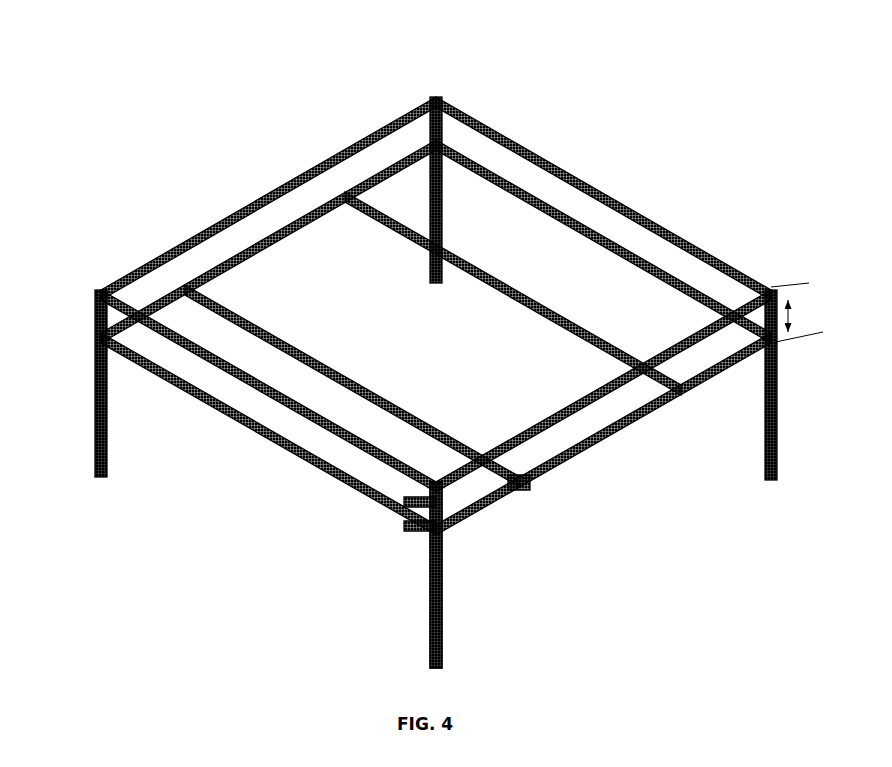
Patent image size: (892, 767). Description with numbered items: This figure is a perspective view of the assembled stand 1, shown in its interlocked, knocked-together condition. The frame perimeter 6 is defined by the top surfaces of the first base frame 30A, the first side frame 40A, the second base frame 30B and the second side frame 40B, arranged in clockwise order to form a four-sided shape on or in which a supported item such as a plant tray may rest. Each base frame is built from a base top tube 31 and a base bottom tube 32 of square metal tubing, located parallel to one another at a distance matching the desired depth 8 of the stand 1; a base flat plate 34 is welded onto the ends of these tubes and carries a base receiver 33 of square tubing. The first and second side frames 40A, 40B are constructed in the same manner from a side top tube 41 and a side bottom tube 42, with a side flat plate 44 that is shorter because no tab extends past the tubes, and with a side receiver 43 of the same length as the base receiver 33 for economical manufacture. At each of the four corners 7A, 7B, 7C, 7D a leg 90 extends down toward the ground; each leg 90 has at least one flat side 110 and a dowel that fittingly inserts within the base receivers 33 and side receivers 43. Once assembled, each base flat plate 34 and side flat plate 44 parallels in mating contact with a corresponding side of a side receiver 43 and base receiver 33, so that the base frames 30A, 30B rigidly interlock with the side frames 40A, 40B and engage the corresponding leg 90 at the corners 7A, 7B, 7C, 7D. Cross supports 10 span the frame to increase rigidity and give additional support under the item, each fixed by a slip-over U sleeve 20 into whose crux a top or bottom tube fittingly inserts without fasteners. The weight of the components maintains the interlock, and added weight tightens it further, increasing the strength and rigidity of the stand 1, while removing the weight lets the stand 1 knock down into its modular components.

The stand 1 is at (213, 163).
The frame perimeter 6 is at (685, 327).
The corner 7A is at (91, 281).
The corner 7B is at (441, 91).
The corner 7C is at (769, 282).
The corner 7D is at (432, 473).
The depth 8 is at (797, 313).
The cross support 10 is at (294, 338).
The U sleeve 20 is at (527, 499).
The first base frame 30A is at (240, 468).
The second base frame 30B is at (639, 182).
The base top tube 31 is at (217, 370).
The base bottom tube 32 is at (320, 472).
The base receiver 33 is at (427, 530).
The base flat plate 34 is at (447, 131).
The first side frame 40A is at (293, 161).
The second side frame 40B is at (604, 475).
The side top tube 41 is at (578, 392).
The side bottom tube 42 is at (628, 429).
The side receiver 43 is at (427, 507).
The side flat plate 44 is at (427, 131).
The leg 90 is at (82, 383).
The flat side 110 is at (445, 614).